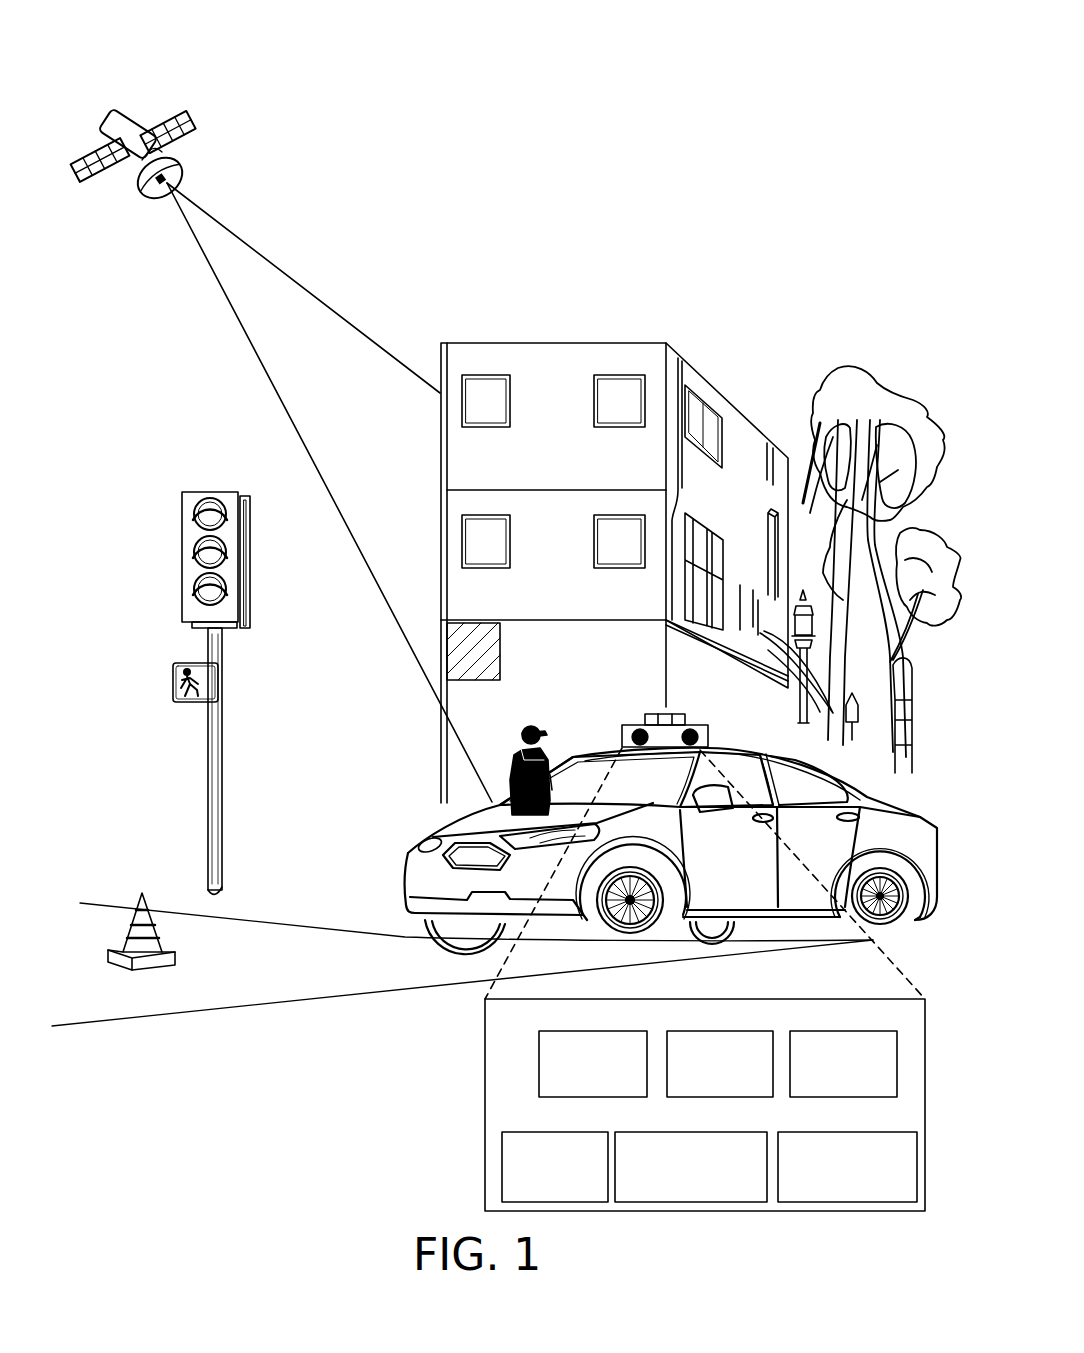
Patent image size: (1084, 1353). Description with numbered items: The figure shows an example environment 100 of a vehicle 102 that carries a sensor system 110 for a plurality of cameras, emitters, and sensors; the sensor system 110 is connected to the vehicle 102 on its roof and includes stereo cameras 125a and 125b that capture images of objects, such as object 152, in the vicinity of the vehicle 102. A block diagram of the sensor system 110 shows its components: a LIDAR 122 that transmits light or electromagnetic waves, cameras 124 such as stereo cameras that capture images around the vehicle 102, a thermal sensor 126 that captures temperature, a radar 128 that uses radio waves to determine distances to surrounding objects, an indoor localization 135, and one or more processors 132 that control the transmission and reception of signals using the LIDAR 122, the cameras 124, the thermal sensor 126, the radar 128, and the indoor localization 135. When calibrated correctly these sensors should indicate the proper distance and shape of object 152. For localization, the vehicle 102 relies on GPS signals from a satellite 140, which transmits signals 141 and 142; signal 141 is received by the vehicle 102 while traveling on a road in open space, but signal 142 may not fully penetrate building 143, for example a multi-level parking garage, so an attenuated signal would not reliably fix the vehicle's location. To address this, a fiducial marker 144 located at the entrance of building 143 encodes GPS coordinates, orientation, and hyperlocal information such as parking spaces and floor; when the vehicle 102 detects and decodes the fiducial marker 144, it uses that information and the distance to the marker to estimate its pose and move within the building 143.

The environment 100 is at (846, 59).
The vehicle 102 is at (410, 870).
The sensor system 110 is at (650, 694).
The LIDAR 122 is at (726, 1031).
The cameras 124 is at (576, 1031).
The stereo camera 125a is at (638, 729).
The stereo camera 125b is at (706, 727).
The thermal sensor 126 is at (841, 1031).
The radar 128 is at (561, 1132).
The processors 132 is at (689, 1132).
The indoor localization 135 is at (856, 1132).
The satellite 140 is at (108, 120).
The signal 141 is at (259, 357).
The signal 142 is at (362, 338).
The building 143 is at (520, 343).
The fiducial marker 144 is at (447, 624).
The object 152 is at (128, 968).